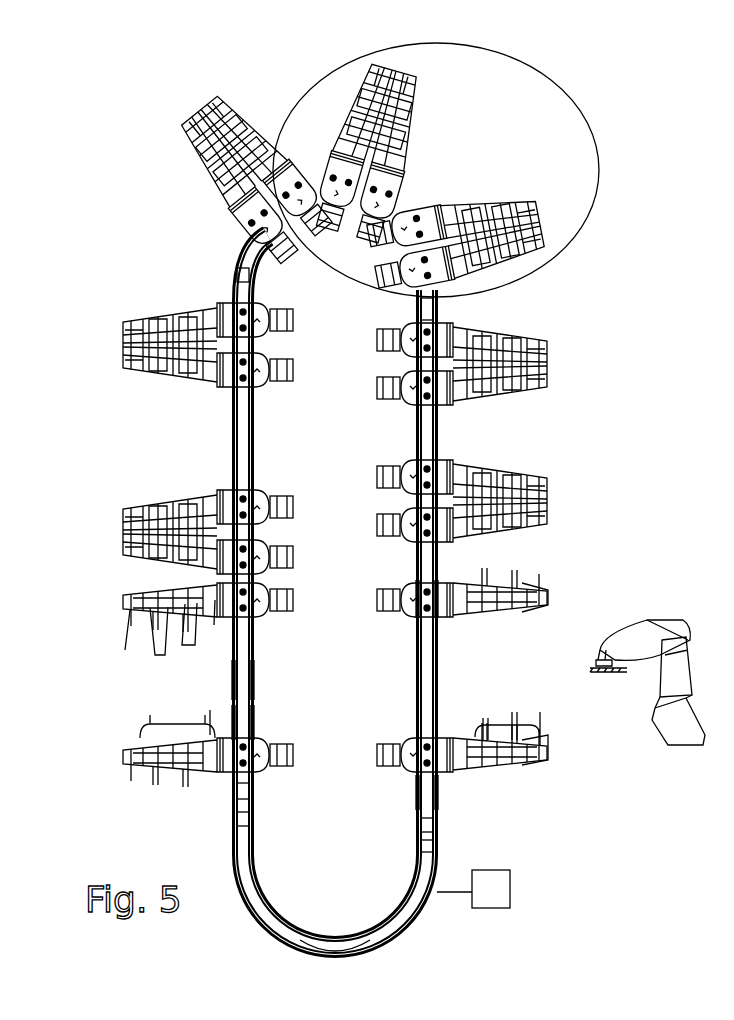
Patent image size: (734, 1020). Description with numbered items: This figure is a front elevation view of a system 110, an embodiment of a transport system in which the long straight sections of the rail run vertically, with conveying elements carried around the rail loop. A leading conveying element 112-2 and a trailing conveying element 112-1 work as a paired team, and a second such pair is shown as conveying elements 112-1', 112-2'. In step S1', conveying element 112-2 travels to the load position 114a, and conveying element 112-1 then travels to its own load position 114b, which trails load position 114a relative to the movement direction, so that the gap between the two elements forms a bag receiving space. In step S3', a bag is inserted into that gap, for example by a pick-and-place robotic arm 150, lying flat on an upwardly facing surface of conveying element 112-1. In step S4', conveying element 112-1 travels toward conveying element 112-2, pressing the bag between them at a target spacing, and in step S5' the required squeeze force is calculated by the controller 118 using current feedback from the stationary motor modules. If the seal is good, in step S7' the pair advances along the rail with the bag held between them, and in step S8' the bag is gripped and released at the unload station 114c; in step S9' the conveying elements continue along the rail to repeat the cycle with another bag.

The system 110 is at (145, 173).
The conveying element 112-1 is at (462, 764).
The conveying element 112-2 is at (462, 580).
The carrier 112-1' is at (176, 609).
The carrier 112-2' is at (199, 764).
The load position 114a is at (398, 590).
The load position 114b is at (403, 760).
The unload station 114c is at (266, 728).
The controller 118 is at (487, 885).
The pick-and-place robotic arm 150 is at (652, 622).
The step S1' is at (558, 583).
The step S3' is at (575, 719).
The step S4' is at (518, 471).
The step S5' is at (500, 501).
The step S7' is at (464, 170).
The step S8' is at (147, 680).
The step S9' is at (335, 896).